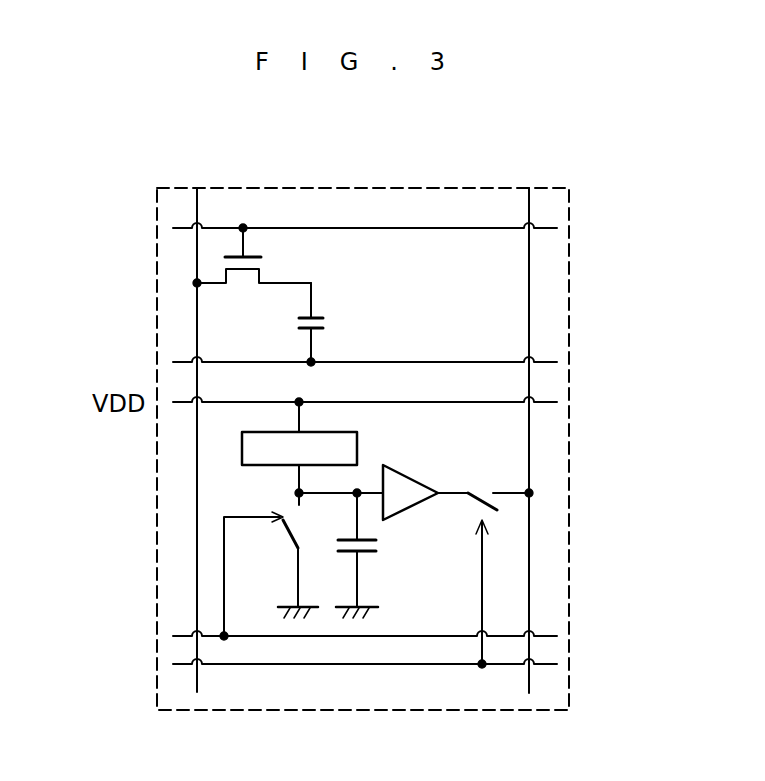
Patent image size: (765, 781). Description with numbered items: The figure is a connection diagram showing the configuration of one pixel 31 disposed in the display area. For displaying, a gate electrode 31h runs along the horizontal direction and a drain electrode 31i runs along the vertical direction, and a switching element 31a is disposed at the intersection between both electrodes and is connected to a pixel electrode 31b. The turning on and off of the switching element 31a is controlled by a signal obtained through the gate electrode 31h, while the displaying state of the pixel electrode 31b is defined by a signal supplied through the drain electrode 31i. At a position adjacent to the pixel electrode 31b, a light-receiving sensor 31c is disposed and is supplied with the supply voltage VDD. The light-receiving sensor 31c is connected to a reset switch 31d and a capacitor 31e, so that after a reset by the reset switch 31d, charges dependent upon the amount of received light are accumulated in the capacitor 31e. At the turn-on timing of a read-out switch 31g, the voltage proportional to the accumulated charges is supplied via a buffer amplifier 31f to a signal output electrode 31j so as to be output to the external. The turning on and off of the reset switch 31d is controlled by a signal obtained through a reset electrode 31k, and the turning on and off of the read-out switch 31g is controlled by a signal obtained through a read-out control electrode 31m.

The pixel 31 is at (451, 187).
The switching element 31a is at (243, 284).
The pixel electrode 31b is at (325, 322).
The light-receiving sensor 31c is at (358, 446).
The reset switch 31d is at (290, 512).
The capacitor 31e is at (373, 546).
The buffer amplifier 31f is at (415, 510).
The read-out switch 31g is at (486, 490).
The gate electrode 31h is at (185, 228).
The drain electrode 31i is at (190, 228).
The signal output electrode 31j is at (529, 297).
The reset electrode 31k is at (185, 636).
The read-out control electrode 31m is at (302, 665).